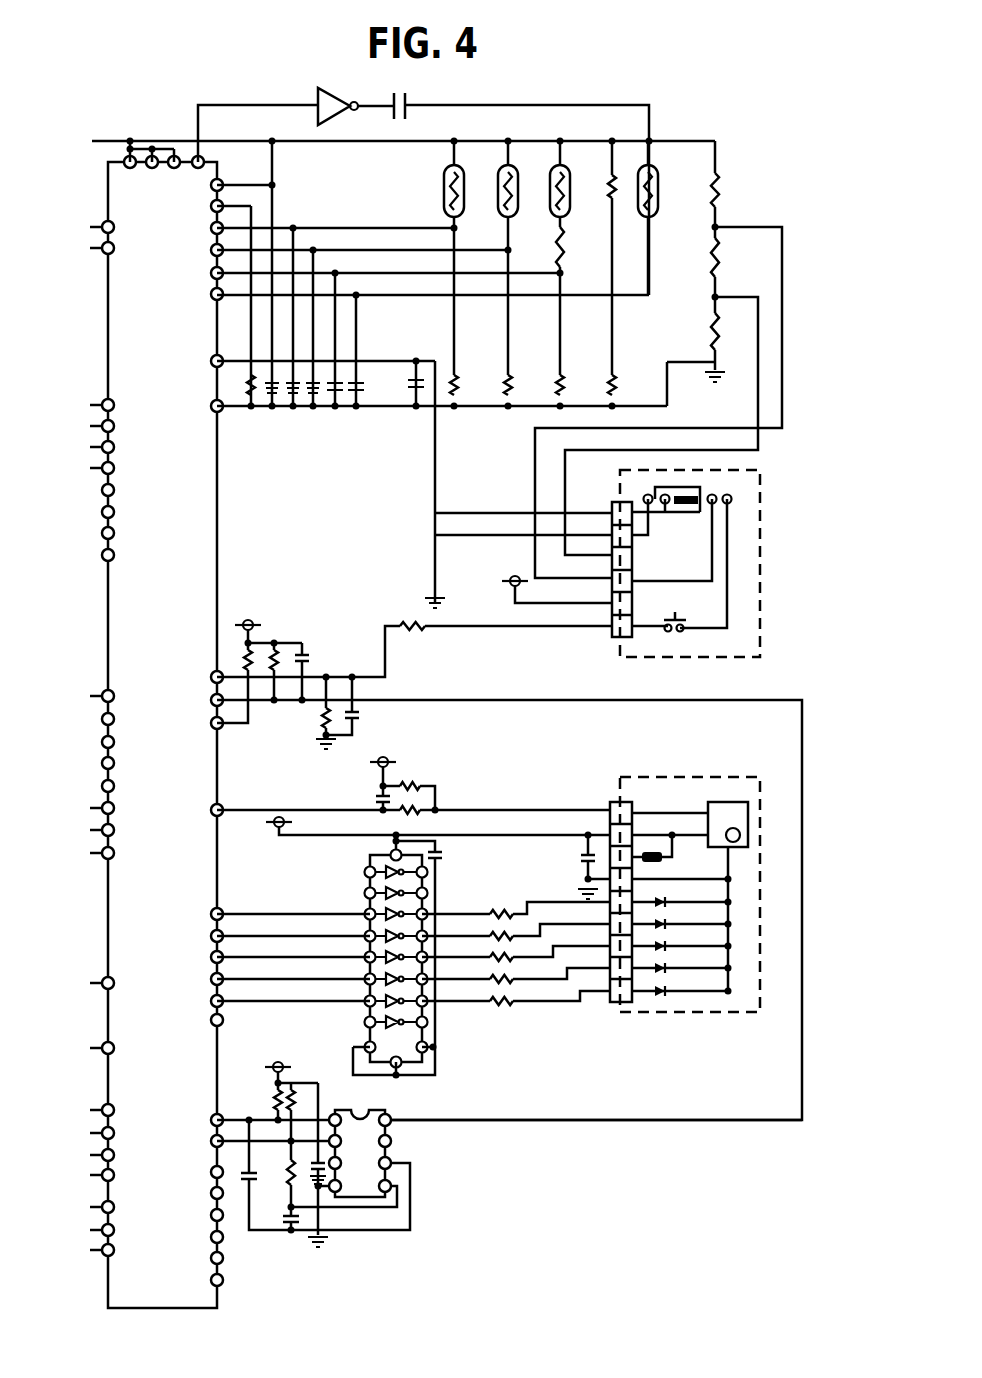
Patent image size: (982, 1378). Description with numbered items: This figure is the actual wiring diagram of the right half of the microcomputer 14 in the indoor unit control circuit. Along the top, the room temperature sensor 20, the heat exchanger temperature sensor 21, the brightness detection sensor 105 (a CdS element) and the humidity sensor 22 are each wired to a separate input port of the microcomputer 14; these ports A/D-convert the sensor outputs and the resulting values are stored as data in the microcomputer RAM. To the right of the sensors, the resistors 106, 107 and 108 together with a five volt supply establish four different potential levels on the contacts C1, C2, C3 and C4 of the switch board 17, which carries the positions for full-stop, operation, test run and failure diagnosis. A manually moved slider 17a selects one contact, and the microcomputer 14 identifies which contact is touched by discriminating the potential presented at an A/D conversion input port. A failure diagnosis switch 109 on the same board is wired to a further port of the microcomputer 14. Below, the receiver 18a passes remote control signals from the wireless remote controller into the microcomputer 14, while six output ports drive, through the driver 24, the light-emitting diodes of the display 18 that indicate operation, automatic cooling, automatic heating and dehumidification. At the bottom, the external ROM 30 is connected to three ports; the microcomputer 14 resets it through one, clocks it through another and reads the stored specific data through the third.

The microcomputer 14 is at (206, 546).
The room temperature sensor 20 is at (443, 196).
The temperature sensor 21 is at (497, 196).
The humidity sensor 22 is at (660, 196).
The brightness detection sensor 105 is at (571, 192).
The resistor 106 is at (721, 197).
The resistor 107 is at (740, 260).
The resistor 108 is at (712, 330).
The failure diagnosis switch 109 is at (670, 620).
The switch board 17 is at (654, 530).
The slider 17a is at (668, 487).
The contact C1 is at (644, 495).
The contact C2 is at (668, 504).
The contact C3 is at (715, 494).
The contact C4 is at (732, 498).
The display 18 is at (697, 910).
The receiver 18a is at (720, 805).
The driver 24 is at (412, 1036).
The external ROM 30 is at (372, 1152).